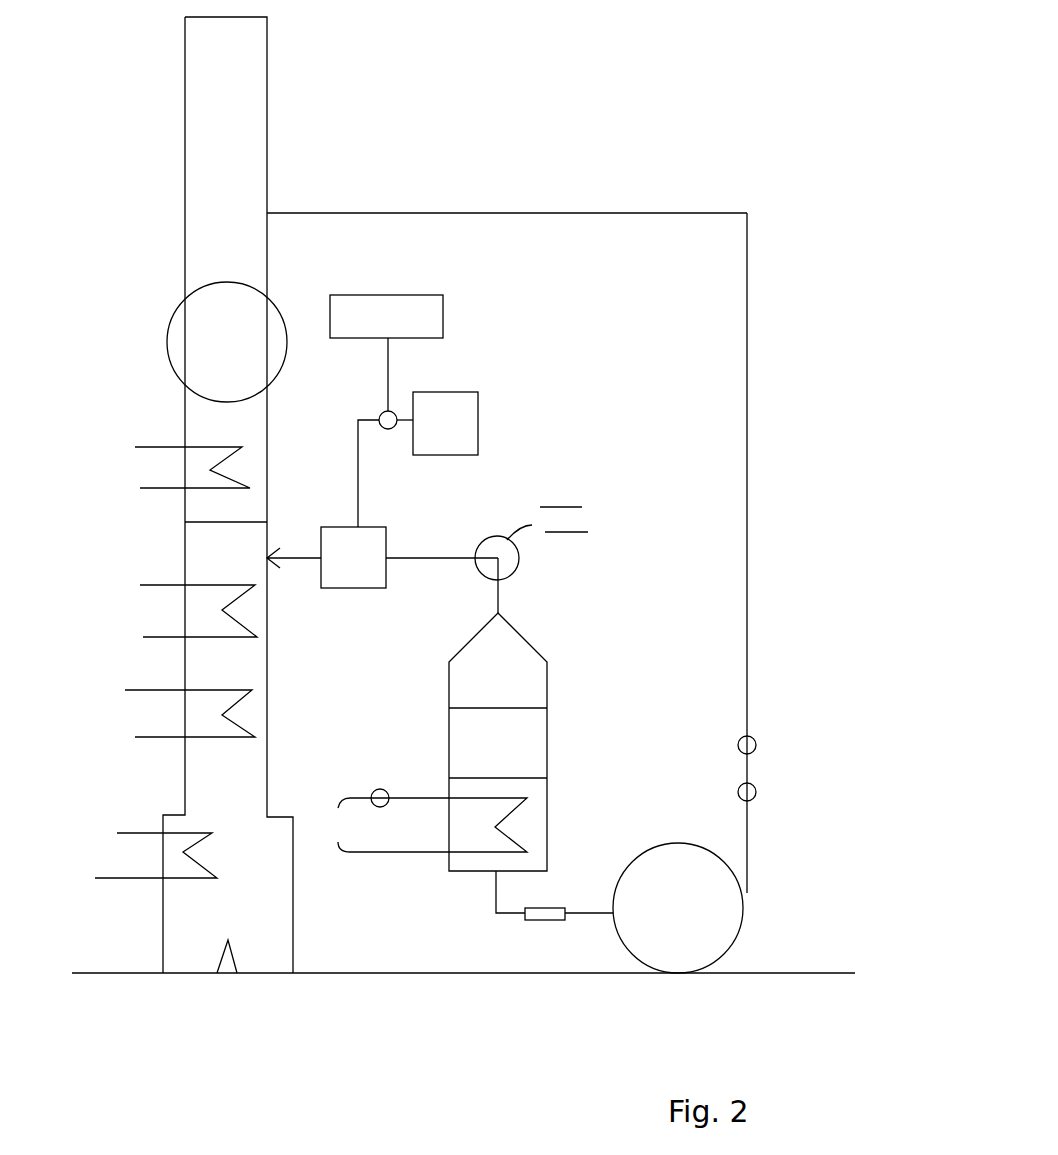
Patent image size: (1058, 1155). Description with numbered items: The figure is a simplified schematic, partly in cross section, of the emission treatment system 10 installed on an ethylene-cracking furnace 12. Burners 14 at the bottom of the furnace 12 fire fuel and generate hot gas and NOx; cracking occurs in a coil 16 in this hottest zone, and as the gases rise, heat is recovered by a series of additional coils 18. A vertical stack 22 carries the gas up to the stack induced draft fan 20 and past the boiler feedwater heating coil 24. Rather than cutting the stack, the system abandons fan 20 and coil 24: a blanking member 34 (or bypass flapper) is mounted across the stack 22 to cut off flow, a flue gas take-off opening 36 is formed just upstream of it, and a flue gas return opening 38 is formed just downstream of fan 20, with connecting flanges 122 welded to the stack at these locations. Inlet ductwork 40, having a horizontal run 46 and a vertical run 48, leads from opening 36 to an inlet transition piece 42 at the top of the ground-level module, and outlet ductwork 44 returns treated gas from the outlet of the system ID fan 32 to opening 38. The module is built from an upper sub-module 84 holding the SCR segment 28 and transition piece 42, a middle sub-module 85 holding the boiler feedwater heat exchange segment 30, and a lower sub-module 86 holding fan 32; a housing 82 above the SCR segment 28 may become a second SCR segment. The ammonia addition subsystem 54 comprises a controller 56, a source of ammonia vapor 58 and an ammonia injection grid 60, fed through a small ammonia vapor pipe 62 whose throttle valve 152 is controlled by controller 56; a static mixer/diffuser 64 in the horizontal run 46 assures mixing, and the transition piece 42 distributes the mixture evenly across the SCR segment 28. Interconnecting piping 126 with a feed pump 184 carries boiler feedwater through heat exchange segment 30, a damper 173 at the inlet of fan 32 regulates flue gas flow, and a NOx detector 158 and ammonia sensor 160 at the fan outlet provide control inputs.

The emission treatment system 10 is at (648, 142).
The ethylene-cracking furnace 12 is at (118, 125).
The burners 14 is at (222, 953).
The coil 16 is at (118, 833).
The additional coils 18 is at (130, 690).
The induced draft fan 20 is at (180, 318).
The vertical stack 22 is at (258, 62).
The boiler feedwater heating coil 24 is at (135, 447).
The blanking member 34 is at (195, 520).
The flue gas take-off opening 36 is at (272, 545).
The flue gas return opening 38 is at (270, 212).
The inlet ductwork 40 is at (412, 565).
The inlet transition piece 42 is at (510, 616).
The outlet ductwork 44 is at (760, 540).
The horizontal run 46 is at (462, 550).
The vertical run 48 is at (505, 592).
The ammonia addition subsystem 54 is at (484, 378).
The controller 56 is at (443, 298).
The source of ammonia vapor 58 is at (480, 404).
The ammonia injection grid 60 is at (380, 525).
The ammonia vapor pipe 62 is at (350, 428).
The static mixer/diffuser 64 is at (430, 550).
The housing 82 is at (548, 672).
The upper sub-module 84 is at (430, 670).
The middle sub-module 85 is at (637, 812).
The lower sub-module 86 is at (778, 864).
The SCR segment 28 is at (548, 725).
The boiler feedwater heat exchange segment 30 is at (548, 804).
The system ID fan 32 is at (735, 928).
The connecting flanges 122 is at (265, 212).
The interconnecting piping 126 is at (339, 825).
The throttle valve 152 is at (380, 412).
The NOx detector 158 is at (757, 745).
The ammonia sensor 160 is at (757, 793).
The damper 173 is at (558, 922).
The feed pump 184 is at (374, 790).